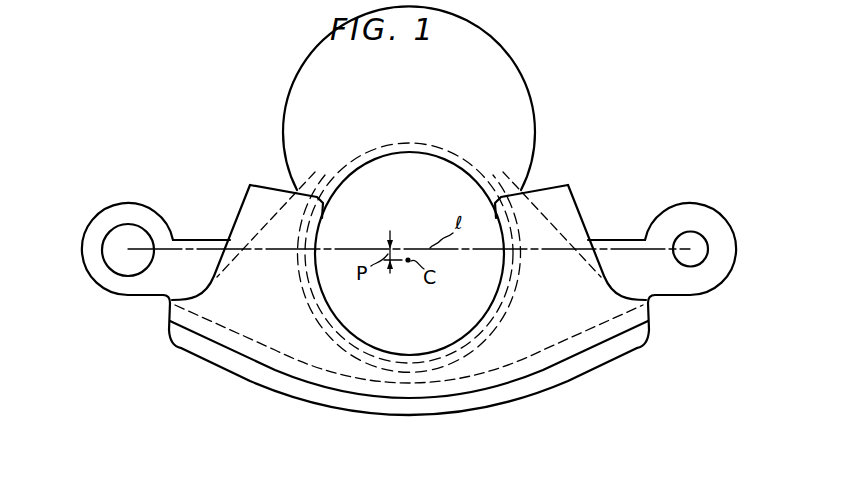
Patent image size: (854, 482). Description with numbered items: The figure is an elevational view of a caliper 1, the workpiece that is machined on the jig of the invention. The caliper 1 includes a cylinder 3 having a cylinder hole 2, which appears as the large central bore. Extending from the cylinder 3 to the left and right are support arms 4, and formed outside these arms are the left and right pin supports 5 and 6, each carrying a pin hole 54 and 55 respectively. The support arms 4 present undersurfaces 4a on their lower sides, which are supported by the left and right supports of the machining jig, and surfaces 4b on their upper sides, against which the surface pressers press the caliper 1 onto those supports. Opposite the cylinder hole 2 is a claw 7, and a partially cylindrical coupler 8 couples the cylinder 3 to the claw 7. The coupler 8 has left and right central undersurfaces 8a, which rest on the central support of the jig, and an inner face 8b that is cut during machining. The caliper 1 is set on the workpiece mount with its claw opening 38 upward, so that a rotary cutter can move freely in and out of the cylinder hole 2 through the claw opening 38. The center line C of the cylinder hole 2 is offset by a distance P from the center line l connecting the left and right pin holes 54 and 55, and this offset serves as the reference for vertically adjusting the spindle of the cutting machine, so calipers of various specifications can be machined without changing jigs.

The caliper 1 is at (409, 297).
The cylinder hole 2 is at (424, 152).
The cylinder 3 is at (397, 125).
The support arms 4 is at (409, 253).
The undersurfaces of support arms 4a is at (124, 297).
The surfaces of support arm 4b is at (200, 240).
The left pin support 5 is at (112, 210).
The right pin support 6 is at (706, 210).
The claw 7 is at (541, 186).
The coupler 8 is at (493, 411).
The central undersurfaces of coupler 8a is at (446, 396).
The inner face of coupler 8b is at (510, 358).
The claw opening 38 is at (332, 304).
The left pin hole 54 is at (133, 227).
The right pin hole 55 is at (685, 229).